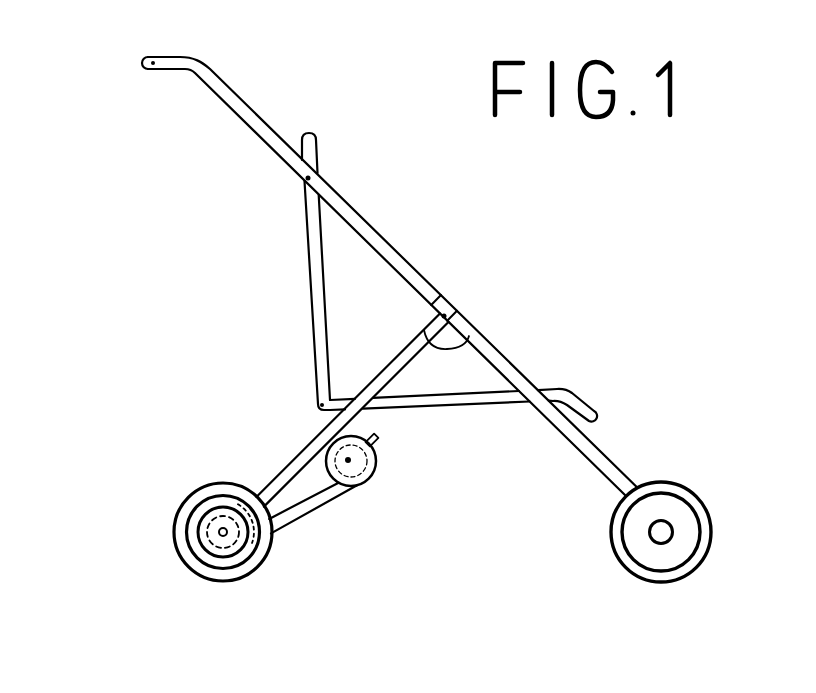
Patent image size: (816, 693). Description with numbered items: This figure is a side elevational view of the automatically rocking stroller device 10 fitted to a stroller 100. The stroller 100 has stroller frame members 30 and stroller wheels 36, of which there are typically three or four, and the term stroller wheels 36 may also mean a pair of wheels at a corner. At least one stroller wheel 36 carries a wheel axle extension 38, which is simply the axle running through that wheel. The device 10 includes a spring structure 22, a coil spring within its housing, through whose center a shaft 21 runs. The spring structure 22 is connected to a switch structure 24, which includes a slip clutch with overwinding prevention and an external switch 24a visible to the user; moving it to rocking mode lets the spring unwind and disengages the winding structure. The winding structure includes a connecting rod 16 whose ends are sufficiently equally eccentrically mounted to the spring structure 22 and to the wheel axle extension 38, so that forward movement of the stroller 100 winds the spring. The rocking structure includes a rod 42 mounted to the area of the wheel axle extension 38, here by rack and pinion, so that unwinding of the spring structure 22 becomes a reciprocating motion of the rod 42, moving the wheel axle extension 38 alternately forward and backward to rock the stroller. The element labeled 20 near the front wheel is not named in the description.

The automatically rocking stroller device 10 is at (312, 540).
The connecting rod 16 is at (340, 508).
The front wheel assembly 20 is at (187, 573).
The shaft 21 is at (377, 460).
The spring structure 22 is at (313, 433).
The switch structure 24 is at (362, 447).
The external switch 24a is at (374, 437).
The stroller frame members 30 is at (469, 336).
The stroller wheels 36 is at (700, 495).
The wheel axle extension 38 is at (210, 527).
The rod 42 is at (297, 480).
The stroller 100 is at (207, 66).